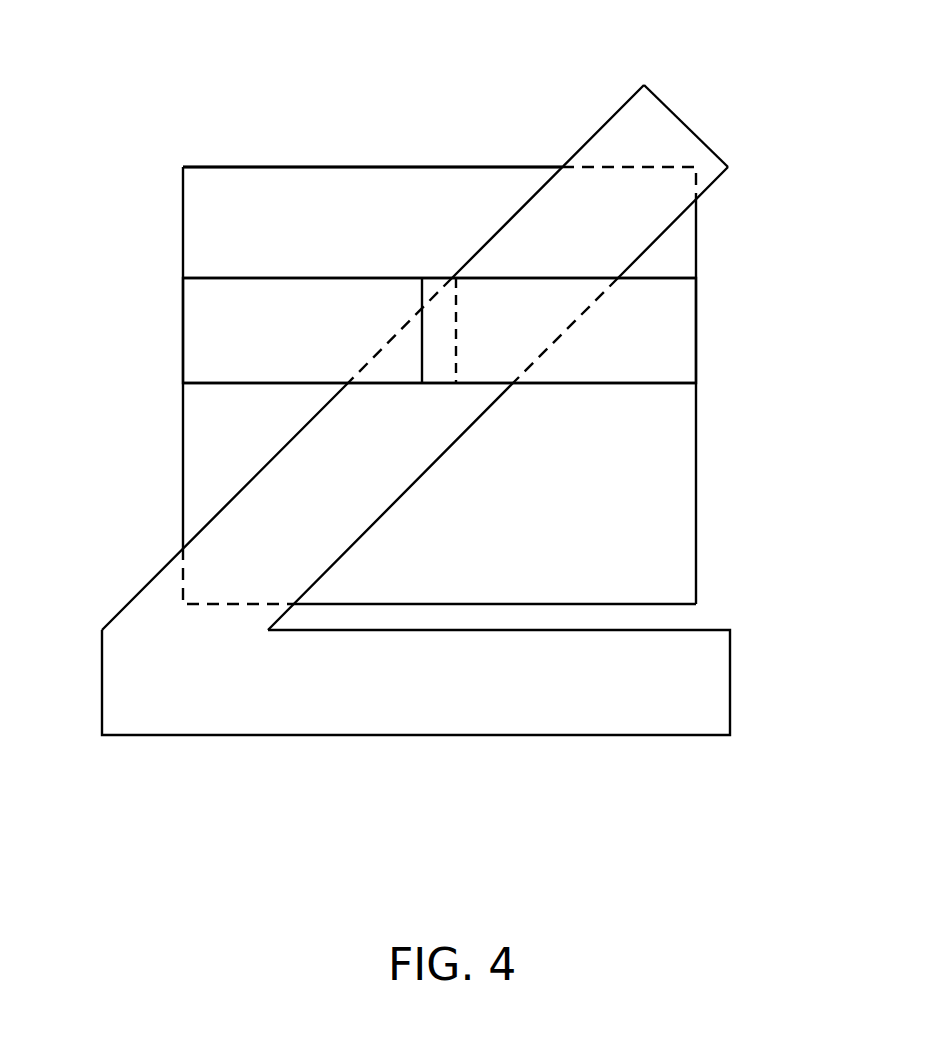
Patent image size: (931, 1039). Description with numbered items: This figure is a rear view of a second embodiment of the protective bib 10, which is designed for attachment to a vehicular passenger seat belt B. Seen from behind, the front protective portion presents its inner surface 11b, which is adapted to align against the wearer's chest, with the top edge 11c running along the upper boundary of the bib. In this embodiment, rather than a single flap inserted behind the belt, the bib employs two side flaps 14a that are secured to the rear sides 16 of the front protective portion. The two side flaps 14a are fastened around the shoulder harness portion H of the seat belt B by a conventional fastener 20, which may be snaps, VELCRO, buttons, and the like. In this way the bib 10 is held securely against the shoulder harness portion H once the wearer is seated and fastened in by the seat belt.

The bib 10 is at (455, 320).
The inner surface 11b is at (322, 192).
The top edge 11c is at (480, 167).
The side flaps 14a is at (207, 315).
The rear sides 16 is at (215, 228).
The fastener 20 is at (443, 332).
The shoulder harness portion H is at (670, 148).
The seat belt B is at (298, 707).